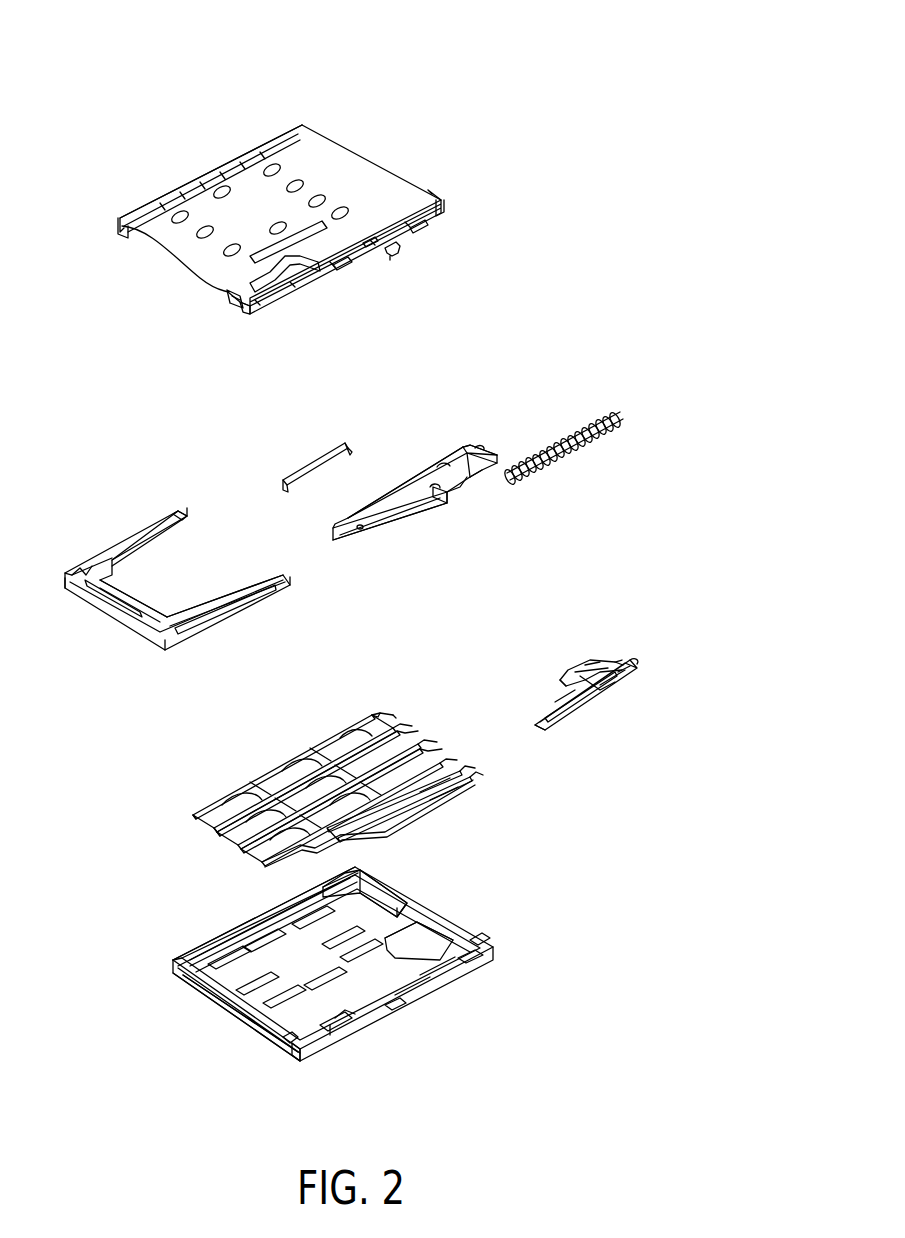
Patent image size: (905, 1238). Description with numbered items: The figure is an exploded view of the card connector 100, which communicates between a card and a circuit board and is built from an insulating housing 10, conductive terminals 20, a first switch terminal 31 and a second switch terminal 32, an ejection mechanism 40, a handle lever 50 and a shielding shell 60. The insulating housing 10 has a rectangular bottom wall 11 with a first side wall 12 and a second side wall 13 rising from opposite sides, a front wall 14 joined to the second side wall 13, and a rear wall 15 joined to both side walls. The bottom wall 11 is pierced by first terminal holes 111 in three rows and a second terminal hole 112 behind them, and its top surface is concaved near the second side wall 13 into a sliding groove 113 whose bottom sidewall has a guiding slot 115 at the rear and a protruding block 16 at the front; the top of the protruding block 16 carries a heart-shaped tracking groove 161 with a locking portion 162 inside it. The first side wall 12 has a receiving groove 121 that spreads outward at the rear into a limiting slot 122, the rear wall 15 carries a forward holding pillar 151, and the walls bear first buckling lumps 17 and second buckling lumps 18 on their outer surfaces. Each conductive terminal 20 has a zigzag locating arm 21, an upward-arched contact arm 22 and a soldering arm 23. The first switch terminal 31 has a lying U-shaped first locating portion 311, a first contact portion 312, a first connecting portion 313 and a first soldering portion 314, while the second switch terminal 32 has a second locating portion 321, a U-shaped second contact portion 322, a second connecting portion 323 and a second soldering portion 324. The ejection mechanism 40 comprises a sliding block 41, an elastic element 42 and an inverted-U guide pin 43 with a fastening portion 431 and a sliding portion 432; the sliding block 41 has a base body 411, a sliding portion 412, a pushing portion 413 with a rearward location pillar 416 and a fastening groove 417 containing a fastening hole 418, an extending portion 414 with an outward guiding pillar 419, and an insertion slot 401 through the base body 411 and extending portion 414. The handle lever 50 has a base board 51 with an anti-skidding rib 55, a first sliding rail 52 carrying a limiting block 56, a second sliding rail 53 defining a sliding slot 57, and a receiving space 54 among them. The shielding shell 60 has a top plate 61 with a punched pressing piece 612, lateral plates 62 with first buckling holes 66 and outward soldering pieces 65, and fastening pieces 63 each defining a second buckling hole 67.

The card connector 100 is at (64, 44).
The insulating housing 10 is at (349, 981).
The bottom wall 11 is at (215, 1010).
The first terminal holes 111 is at (195, 982).
The second terminal hole 112 is at (425, 935).
The sliding groove 113 is at (435, 968).
The guiding slot 115 is at (420, 990).
The first side wall 12 is at (180, 960).
The receiving groove 121 is at (240, 935).
The limiting slot 122 is at (200, 950).
The second side wall 13 is at (485, 955).
The front wall 14 is at (294, 1052).
The rear wall 15 is at (398, 895).
The holding pillar 151 is at (482, 936).
The protruding block 16 is at (322, 1030).
The tracking groove 161 is at (348, 1016).
The locking portion 162 is at (332, 1035).
The first buckling lumps 17 is at (395, 1008).
The second buckling lumps 18 is at (285, 1042).
The conductive terminals 20 is at (326, 761).
The locating arm 21 is at (198, 812).
The contact arm 22 is at (228, 800).
The soldering arm 23 is at (372, 712).
The first switch terminal 31 is at (596, 717).
The first locating portion 311 is at (568, 730).
The first contact portion 312 is at (560, 692).
The first connecting portion 313 is at (622, 683).
The first soldering portion 314 is at (640, 666).
The second switch terminal 32 is at (597, 650).
The second locating portion 321 is at (560, 674).
The second contact portion 322 is at (635, 665).
The second connecting portion 323 is at (593, 662).
The second soldering portion 324 is at (622, 660).
The ejection mechanism 40 is at (560, 348).
The sliding block 41 is at (439, 495).
The insertion slot 401 is at (400, 503).
The base body 411 is at (480, 475).
The sliding portion 412 is at (476, 446).
The pushing portion 413 is at (448, 500).
The extending portion 414 is at (380, 535).
The location pillar 416 is at (462, 490).
The fastening groove 417 is at (440, 470).
The fastening hole 418 is at (435, 495).
The guiding pillar 419 is at (360, 530).
The elastic element 42 is at (563, 415).
The guide pin 43 is at (318, 471).
The fastening portion 431 is at (350, 455).
The sliding portion 432 is at (284, 490).
The handle lever 50 is at (152, 565).
The base board 51 is at (72, 565).
The first sliding rail 52 is at (112, 552).
The second sliding rail 53 is at (258, 592).
The receiving space 54 is at (148, 608).
The anti-skidding rib 55 is at (130, 618).
The limiting block 56 is at (178, 510).
The sliding slot 57 is at (228, 615).
The shielding shell 60 is at (292, 240).
The top plate 61 is at (200, 183).
The lateral plates 62 is at (120, 234).
The fastening pieces 63 is at (243, 314).
The soldering pieces 65 is at (392, 258).
The first buckling holes 66 is at (346, 265).
The second buckling hole 67 is at (227, 294).
The pressing piece 612 is at (296, 270).